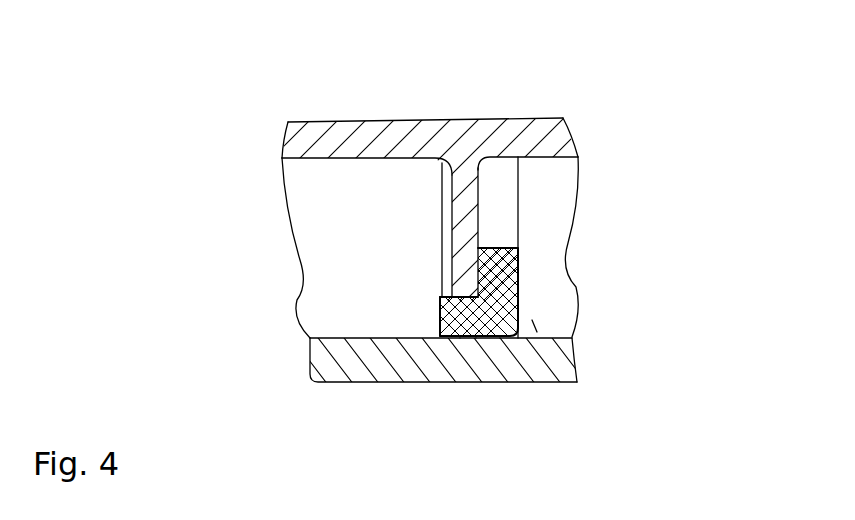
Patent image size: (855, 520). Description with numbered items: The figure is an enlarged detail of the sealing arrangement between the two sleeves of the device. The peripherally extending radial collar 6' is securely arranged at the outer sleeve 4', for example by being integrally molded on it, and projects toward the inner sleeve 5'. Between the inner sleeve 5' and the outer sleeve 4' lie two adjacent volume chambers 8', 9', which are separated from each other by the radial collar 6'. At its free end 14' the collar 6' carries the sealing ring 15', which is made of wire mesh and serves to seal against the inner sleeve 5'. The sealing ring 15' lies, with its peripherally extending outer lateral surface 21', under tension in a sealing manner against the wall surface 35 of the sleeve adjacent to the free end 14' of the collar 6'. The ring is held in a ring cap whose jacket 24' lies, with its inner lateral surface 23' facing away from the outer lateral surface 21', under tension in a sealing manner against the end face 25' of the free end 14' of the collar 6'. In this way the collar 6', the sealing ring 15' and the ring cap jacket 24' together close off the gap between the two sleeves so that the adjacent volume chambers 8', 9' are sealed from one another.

The outer sleeve 4' is at (426, 173).
The inner sleeve 5' is at (447, 398).
The radial collar 6' is at (326, 230).
The volume chamber 8' is at (344, 248).
The volume chamber 9' is at (548, 247).
The free end 14' is at (315, 230).
The sealing ring 15' is at (443, 402).
The outer lateral surface 21' is at (504, 402).
The inner lateral surface 23' is at (515, 274).
The jacket 24' is at (405, 401).
The end face 25' is at (316, 351).
The wall surface 35 is at (542, 337).